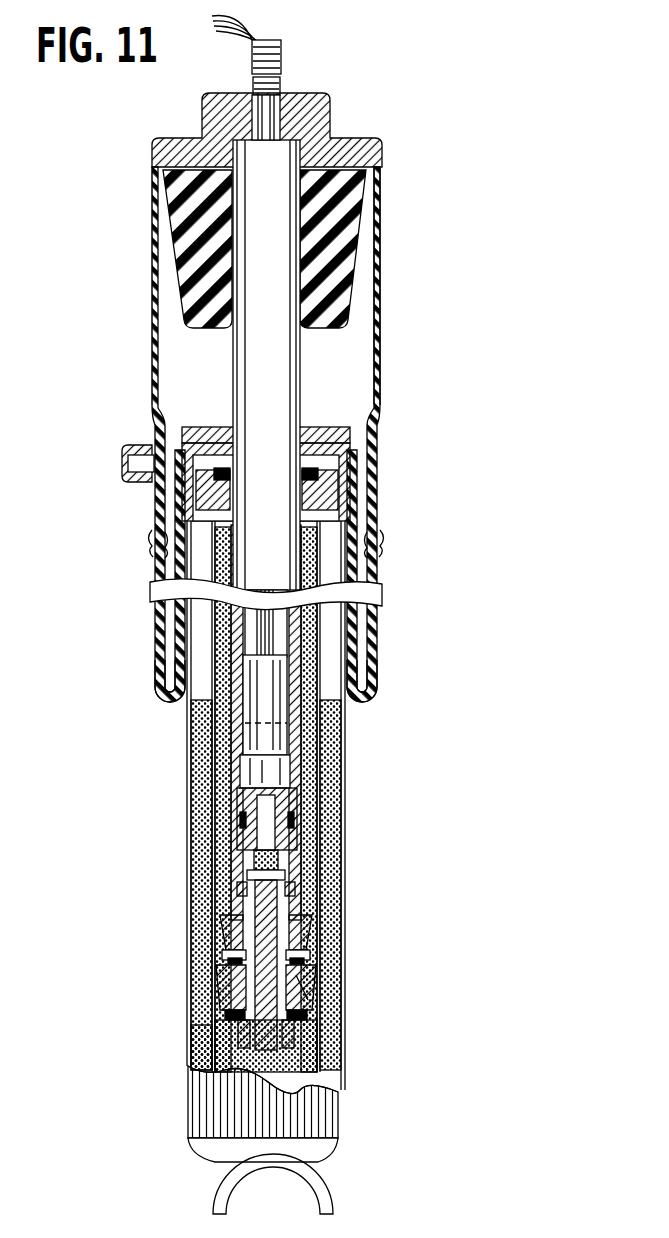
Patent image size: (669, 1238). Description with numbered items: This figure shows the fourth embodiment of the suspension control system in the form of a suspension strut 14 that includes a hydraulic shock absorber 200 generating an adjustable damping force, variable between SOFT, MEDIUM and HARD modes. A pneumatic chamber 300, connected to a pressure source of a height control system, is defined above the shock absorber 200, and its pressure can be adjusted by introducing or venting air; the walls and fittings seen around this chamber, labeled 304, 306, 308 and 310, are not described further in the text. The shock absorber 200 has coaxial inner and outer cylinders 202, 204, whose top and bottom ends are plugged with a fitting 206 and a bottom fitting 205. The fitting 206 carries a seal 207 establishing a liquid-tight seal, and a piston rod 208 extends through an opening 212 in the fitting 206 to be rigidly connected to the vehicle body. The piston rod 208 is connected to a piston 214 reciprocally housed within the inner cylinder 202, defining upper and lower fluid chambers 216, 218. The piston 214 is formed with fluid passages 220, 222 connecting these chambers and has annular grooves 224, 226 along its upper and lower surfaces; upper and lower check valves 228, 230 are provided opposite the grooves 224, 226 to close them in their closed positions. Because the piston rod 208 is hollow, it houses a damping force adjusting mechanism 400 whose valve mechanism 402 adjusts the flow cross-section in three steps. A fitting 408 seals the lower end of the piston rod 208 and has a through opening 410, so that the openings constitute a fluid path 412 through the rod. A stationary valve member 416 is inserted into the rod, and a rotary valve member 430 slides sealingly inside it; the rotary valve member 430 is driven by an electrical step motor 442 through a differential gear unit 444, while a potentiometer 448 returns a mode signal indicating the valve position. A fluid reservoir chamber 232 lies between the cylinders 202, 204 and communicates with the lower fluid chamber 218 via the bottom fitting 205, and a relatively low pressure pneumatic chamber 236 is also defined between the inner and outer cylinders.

The suspension strut 14 is at (108, 590).
The shock absorber 200 is at (358, 743).
The inner cylinder 202 is at (345, 793).
The outer cylinder 204 is at (318, 840).
The bottom fitting 205 is at (208, 1153).
The fitting 206 is at (338, 415).
The seal 207 is at (342, 462).
The piston rod 208 is at (236, 382).
The opening 212 is at (297, 507).
The piston 214 is at (307, 973).
The upper fluid chamber 216 is at (303, 862).
The lower fluid chamber 218 is at (300, 1052).
The fluid passage 220 is at (300, 994).
The fluid passage 222 is at (222, 985).
The annular groove 224 is at (313, 963).
The annular groove 226 is at (292, 1013).
The upper check valve 228 is at (226, 966).
The lower check valve 230 is at (230, 1012).
The fluid reservoir chamber 232 is at (193, 1040).
The low pressure pneumatic chamber 236 is at (158, 668).
The pneumatic chamber 300 is at (363, 352).
The reservoir tube 304 is at (377, 668).
The retaining clip 306 is at (382, 550).
The housing wall 308 is at (383, 250).
The fitting 310 is at (134, 445).
The damping force adjusting mechanism 400 is at (225, 832).
The valve mechanism 402 is at (232, 862).
The fitting 408 is at (226, 957).
The through opening 410 is at (236, 1046).
The fluid path 412 is at (268, 897).
The stationary valve member 416 is at (225, 878).
The rotary valve member 430 is at (238, 888).
The electrical step motor 442 is at (252, 710).
The differential gear unit 444 is at (250, 745).
The potentiometer 448 is at (246, 765).